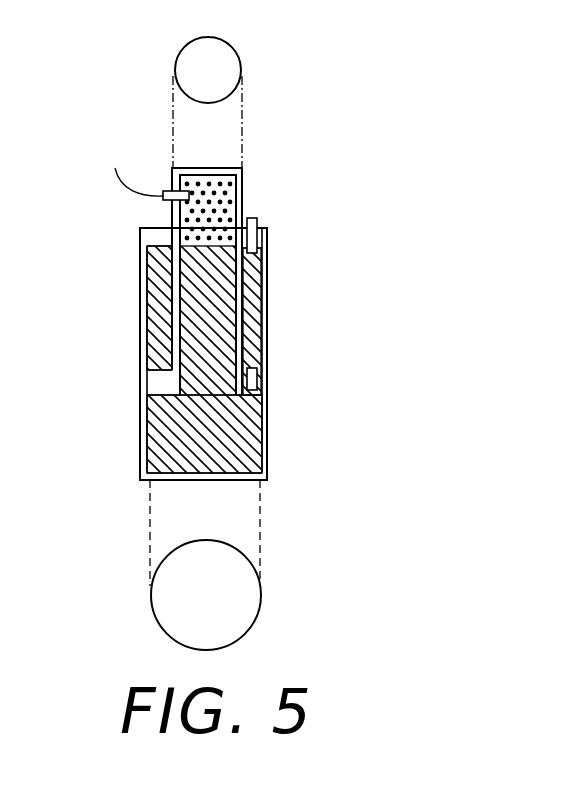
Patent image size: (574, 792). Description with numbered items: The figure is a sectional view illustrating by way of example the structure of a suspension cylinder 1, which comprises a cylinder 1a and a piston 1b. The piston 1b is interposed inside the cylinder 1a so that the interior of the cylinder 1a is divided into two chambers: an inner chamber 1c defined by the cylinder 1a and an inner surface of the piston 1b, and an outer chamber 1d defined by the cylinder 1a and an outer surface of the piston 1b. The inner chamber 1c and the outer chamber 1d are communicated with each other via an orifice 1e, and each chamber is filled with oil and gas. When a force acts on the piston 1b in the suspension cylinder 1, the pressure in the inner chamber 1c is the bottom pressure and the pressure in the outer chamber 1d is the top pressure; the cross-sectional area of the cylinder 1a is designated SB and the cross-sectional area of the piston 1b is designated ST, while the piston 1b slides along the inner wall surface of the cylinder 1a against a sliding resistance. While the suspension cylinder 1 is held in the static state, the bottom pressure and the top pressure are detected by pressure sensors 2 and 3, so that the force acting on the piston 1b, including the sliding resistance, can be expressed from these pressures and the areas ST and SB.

The suspension cylinder 1 is at (298, 134).
The cylinder 1a is at (265, 282).
The piston 1b is at (243, 180).
The inner chamber 1c is at (248, 453).
The outer chamber 1d is at (258, 327).
The orifice 1e is at (255, 382).
The pressure sensor 2 is at (167, 191).
The pressure sensor 3 is at (250, 217).
The cross-sectional area of the piston ST is at (240, 62).
The cross-sectional area of the cylinder SB is at (261, 600).